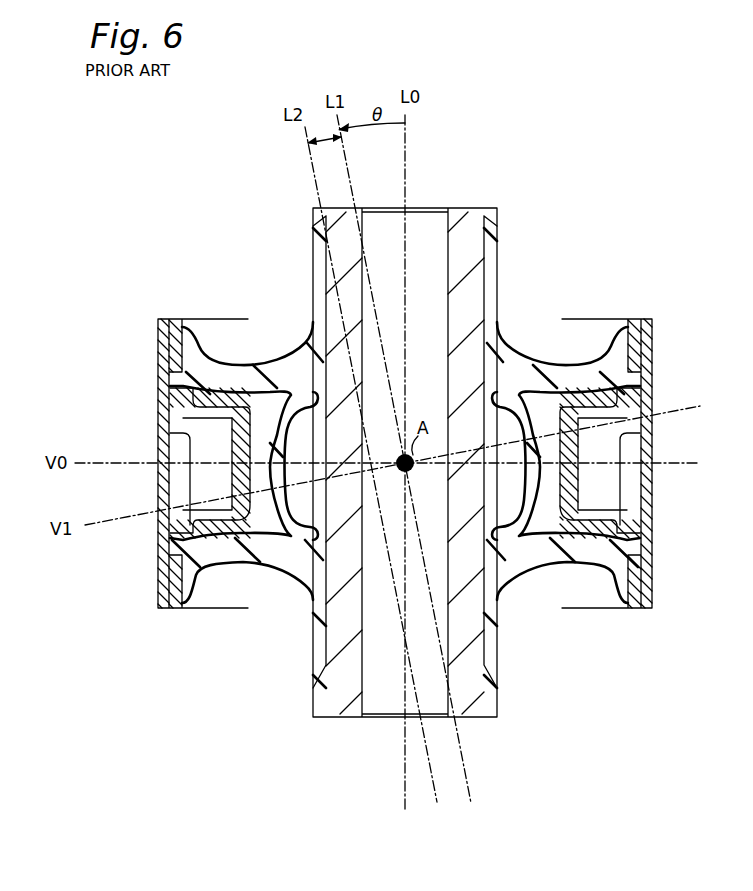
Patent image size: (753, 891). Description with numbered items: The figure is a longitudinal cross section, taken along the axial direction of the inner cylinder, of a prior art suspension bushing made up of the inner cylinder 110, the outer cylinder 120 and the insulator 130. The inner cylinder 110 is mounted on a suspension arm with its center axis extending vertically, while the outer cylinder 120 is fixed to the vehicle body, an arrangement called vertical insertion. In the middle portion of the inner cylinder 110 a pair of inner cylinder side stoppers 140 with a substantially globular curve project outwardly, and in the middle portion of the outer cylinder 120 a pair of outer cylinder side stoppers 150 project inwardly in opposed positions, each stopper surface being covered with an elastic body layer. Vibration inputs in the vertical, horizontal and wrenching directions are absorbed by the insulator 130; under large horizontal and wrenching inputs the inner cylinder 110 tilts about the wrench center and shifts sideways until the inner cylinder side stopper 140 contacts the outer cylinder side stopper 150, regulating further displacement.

The inner cylinder 110 is at (476, 208).
The outer cylinder 120 is at (163, 352).
The insulator 130 is at (247, 372).
The inner cylinder side stopper 140 is at (261, 535).
The outer cylinder side stopper 150 is at (221, 424).